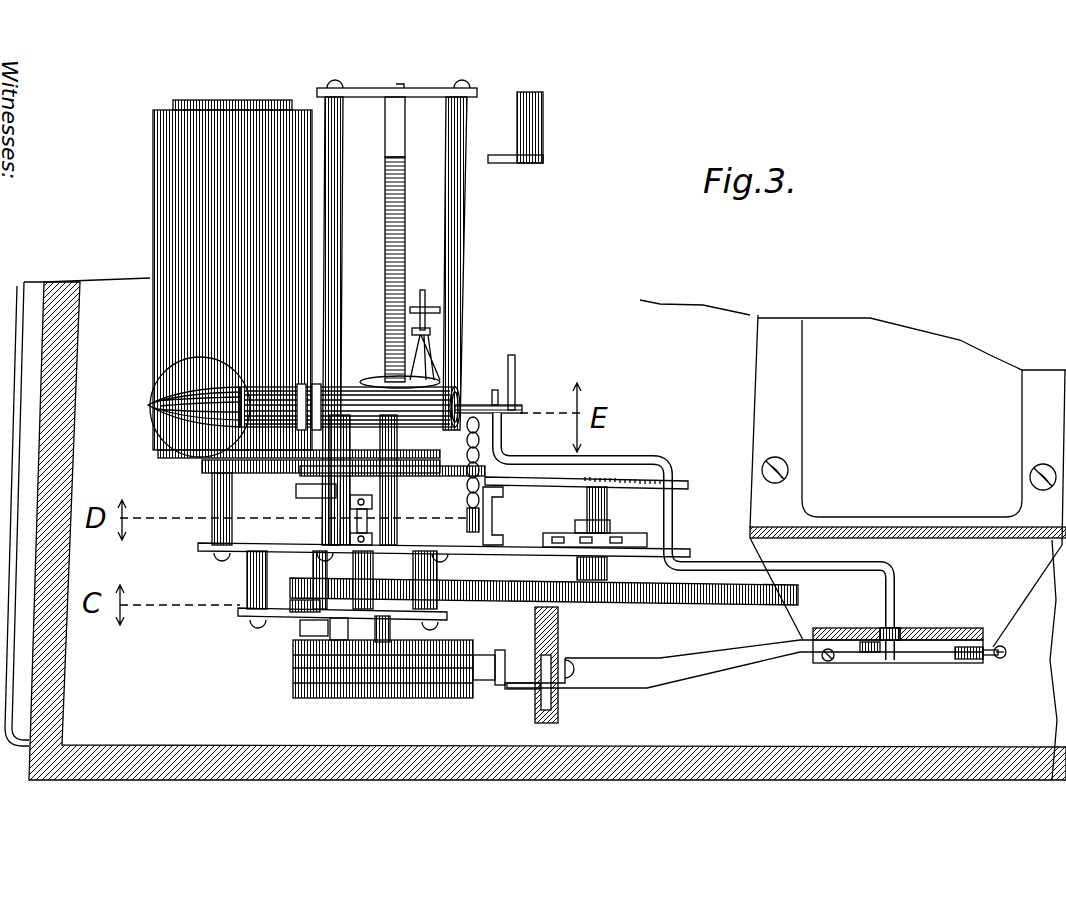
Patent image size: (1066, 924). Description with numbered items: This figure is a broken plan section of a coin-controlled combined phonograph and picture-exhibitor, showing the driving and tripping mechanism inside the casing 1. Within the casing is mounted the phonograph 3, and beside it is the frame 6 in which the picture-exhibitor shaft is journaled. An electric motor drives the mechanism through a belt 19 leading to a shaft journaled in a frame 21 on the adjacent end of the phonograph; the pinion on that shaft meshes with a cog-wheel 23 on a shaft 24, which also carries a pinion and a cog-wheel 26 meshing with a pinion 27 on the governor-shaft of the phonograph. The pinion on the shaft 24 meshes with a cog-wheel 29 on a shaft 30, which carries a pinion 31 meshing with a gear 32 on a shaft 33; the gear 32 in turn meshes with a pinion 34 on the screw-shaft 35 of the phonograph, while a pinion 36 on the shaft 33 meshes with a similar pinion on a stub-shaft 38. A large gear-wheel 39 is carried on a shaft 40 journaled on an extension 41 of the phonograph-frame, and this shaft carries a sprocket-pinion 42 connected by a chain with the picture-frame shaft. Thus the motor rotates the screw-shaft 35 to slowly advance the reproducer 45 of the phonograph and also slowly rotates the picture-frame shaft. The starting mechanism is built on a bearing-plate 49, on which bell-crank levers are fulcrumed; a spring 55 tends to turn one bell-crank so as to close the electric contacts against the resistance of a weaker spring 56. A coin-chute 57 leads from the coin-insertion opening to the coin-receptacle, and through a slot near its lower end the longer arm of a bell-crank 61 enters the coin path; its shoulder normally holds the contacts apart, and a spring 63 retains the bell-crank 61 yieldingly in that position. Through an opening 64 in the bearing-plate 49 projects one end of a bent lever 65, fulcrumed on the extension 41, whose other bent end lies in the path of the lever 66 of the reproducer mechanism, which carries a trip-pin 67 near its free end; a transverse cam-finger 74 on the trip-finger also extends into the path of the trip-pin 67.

The casing 1 is at (93, 744).
The phonograph 3 is at (211, 278).
The frame 6 is at (952, 505).
The belt 19 is at (418, 668).
The frame 21 is at (262, 608).
The cog-wheel 23 is at (275, 627).
The shaft 24 is at (325, 625).
The cog-wheel 26 is at (290, 458).
The pinion 27 is at (300, 470).
The cog-wheel 29 is at (320, 474).
The shaft 30 is at (350, 535).
The pinion 31 is at (300, 492).
The gear 32 is at (330, 510).
The shaft 33 is at (335, 622).
The pinion 34 is at (505, 494).
The screw-shaft 35 is at (390, 270).
The pinion 36 is at (300, 612).
The stub-shaft 38 is at (380, 620).
The gear-wheel 39 is at (668, 604).
The shaft 40 is at (615, 480).
The extension 41 is at (685, 548).
The sprocket-pinion 42 is at (610, 535).
The reproducer 45 is at (343, 396).
The bearing-plate 49 is at (948, 630).
The spring 55 is at (966, 662).
The spring 56 is at (1003, 659).
The coin-chute 57 is at (558, 700).
The bell-crank 61 is at (722, 664).
The spring 63 is at (834, 661).
The opening 64 is at (898, 630).
The bent lever 65 is at (884, 600).
The lever 66 is at (525, 403).
The trip-pin 67 is at (509, 362).
The cam-finger 74 is at (497, 165).